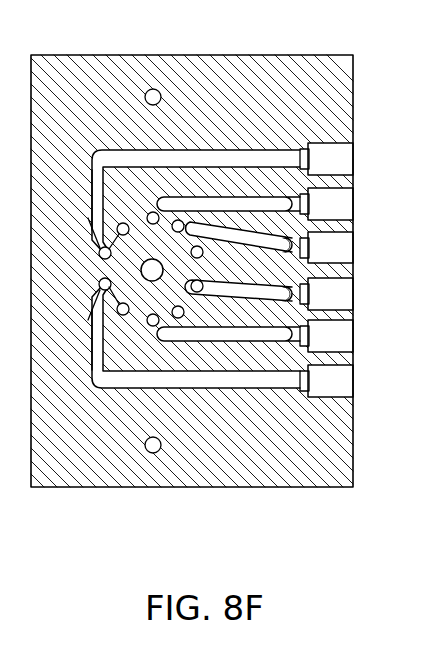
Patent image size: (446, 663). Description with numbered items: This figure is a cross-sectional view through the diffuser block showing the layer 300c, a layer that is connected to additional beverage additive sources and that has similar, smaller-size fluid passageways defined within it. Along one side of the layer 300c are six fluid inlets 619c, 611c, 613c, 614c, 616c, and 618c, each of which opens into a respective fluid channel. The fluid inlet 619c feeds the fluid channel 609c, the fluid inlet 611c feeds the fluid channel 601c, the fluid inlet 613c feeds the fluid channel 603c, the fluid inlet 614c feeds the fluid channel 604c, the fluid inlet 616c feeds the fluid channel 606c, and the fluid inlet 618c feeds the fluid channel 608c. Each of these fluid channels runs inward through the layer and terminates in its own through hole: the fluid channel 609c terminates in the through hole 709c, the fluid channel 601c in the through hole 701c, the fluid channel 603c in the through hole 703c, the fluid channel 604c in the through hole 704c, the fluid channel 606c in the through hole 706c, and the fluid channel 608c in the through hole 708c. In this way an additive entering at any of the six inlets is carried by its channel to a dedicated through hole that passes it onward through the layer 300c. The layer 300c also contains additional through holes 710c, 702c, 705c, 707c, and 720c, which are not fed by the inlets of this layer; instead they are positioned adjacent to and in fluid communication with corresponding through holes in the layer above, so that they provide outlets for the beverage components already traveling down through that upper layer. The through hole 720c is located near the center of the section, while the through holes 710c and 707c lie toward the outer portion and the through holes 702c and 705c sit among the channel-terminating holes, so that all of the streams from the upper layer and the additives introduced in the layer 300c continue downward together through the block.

The layer 300c is at (239, 508).
The fluid channel 601c is at (160, 208).
The fluid channel 603c is at (262, 244).
The fluid channel 604c is at (262, 296).
The fluid channel 606c is at (161, 449).
The fluid channel 608c is at (93, 342).
The fluid channel 609c is at (93, 183).
The fluid inlet 611c is at (333, 207).
The fluid inlet 613c is at (333, 251).
The fluid inlet 614c is at (333, 296).
The fluid inlet 616c is at (333, 340).
The fluid inlet 618c is at (333, 385).
The fluid inlet 619c is at (333, 163).
The through hole 701c is at (151, 212).
The through hole 702c is at (197, 246).
The through hole 703c is at (198, 246).
The through hole 704c is at (198, 292).
The through hole 705c is at (197, 292).
The through hole 706c is at (152, 326).
The through hole 707c is at (101, 389).
The through hole 708c is at (101, 282).
The through hole 709c is at (100, 250).
The through hole 710c is at (101, 151).
The through hole 720c is at (141, 271).